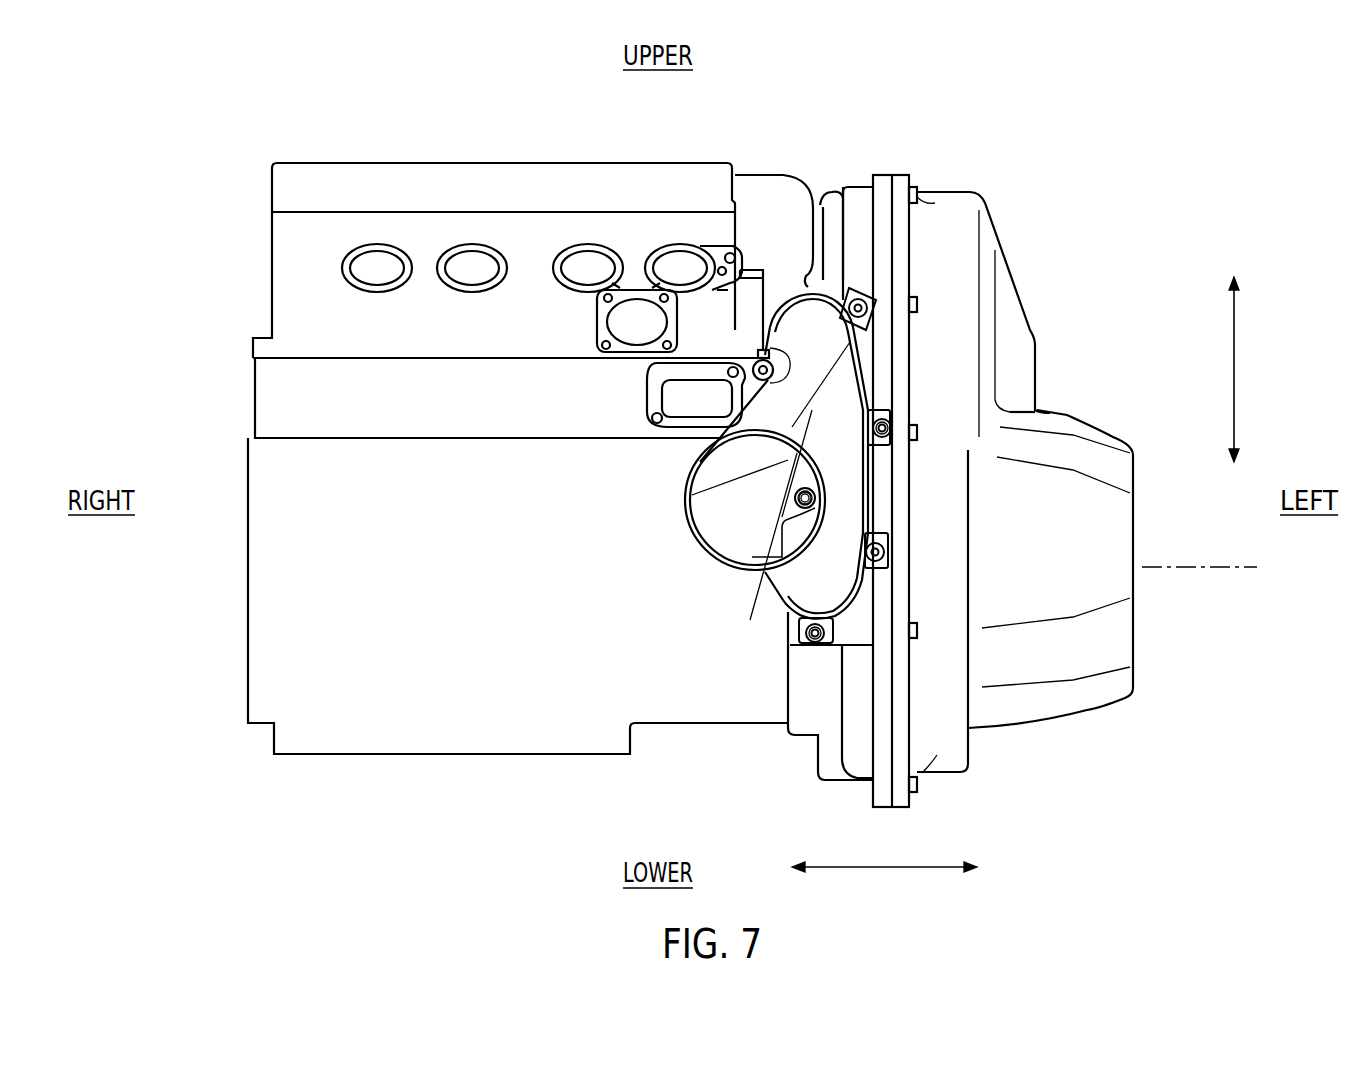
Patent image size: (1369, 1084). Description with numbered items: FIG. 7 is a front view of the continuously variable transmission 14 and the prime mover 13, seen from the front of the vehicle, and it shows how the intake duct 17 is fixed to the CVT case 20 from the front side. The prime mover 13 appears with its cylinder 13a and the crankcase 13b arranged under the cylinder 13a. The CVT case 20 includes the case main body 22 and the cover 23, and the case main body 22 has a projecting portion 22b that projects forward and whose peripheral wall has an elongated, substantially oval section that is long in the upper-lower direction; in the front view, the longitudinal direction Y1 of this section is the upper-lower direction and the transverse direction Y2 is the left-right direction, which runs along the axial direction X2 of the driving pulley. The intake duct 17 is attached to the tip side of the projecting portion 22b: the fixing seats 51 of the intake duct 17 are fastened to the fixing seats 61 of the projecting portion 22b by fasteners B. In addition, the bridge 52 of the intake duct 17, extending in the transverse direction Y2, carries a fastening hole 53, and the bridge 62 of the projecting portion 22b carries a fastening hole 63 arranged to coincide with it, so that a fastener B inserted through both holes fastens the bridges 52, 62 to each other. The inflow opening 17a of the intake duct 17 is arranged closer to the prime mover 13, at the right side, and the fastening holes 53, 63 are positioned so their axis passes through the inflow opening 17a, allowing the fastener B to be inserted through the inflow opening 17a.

The prime mover 13 is at (268, 176).
The cylinder 13a is at (268, 282).
The crankcase 13b is at (248, 622).
The continuously variable transmission 14 is at (1012, 247).
The intake duct 17 is at (762, 600).
The inflow opening 17a is at (710, 475).
The CVT case 20 is at (848, 108).
The case main body 22 is at (887, 173).
The projecting portion 22b is at (835, 298).
The cover 23 is at (957, 200).
The fixing seats 51 is at (885, 420).
The bridge 52 is at (780, 613).
The fastening hole 53 is at (793, 497).
The fixing seats 61 is at (893, 425).
The bridge 62 is at (815, 633).
The fastening hole 63 is at (805, 498).
The fastener B is at (800, 510).
The axial direction X2 is at (1240, 570).
The longitudinal direction Y1 is at (1234, 370).
The transverse direction Y2 is at (883, 870).